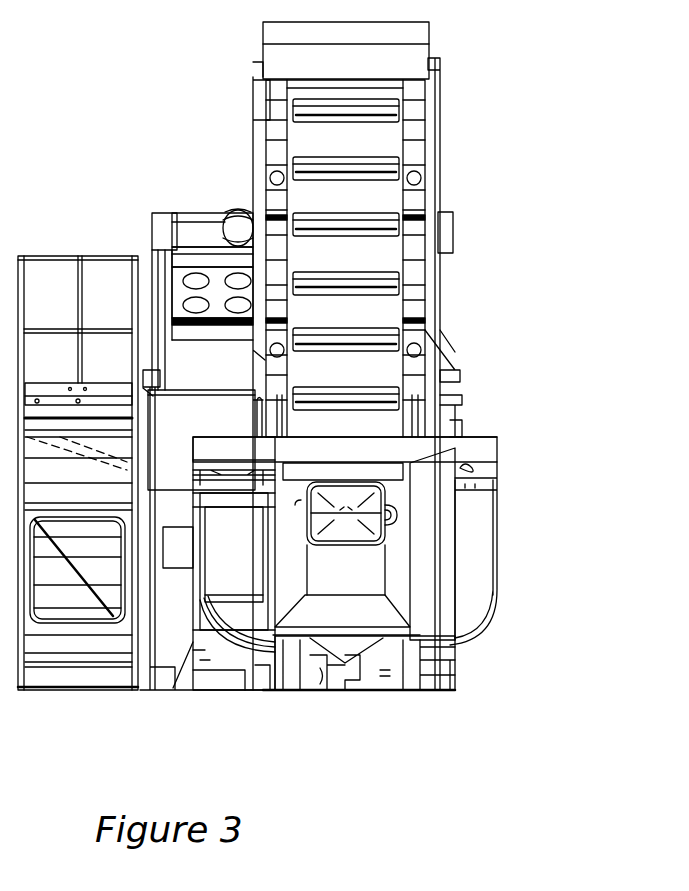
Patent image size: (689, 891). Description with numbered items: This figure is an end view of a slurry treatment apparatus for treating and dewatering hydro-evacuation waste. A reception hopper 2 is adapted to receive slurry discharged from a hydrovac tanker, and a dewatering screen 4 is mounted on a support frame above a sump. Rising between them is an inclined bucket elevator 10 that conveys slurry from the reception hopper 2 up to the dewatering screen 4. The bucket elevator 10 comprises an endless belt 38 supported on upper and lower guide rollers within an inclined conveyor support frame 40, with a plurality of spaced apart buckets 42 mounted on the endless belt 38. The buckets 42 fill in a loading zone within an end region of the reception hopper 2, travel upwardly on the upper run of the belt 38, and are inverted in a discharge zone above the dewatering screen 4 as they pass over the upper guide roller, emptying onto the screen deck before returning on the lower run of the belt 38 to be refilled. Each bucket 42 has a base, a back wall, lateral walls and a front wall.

The reception hopper 2 is at (505, 558).
The dewatering screen 4 is at (140, 225).
The inclined bucket elevator 10 is at (468, 292).
The endless belt 38 is at (383, 137).
The inclined conveyor support frame 40 is at (257, 158).
The buckets 42 is at (398, 170).